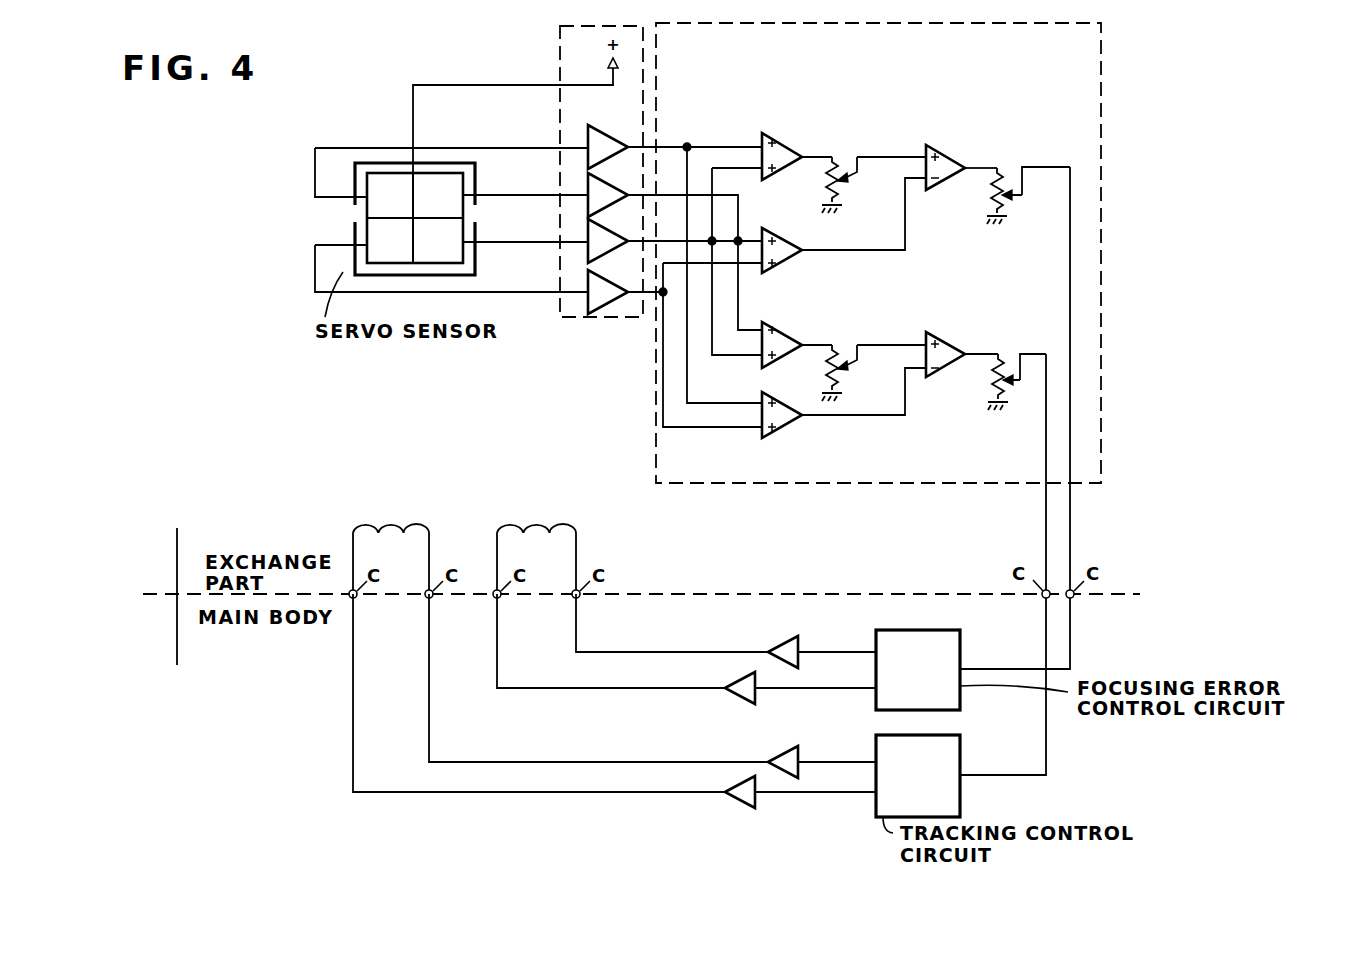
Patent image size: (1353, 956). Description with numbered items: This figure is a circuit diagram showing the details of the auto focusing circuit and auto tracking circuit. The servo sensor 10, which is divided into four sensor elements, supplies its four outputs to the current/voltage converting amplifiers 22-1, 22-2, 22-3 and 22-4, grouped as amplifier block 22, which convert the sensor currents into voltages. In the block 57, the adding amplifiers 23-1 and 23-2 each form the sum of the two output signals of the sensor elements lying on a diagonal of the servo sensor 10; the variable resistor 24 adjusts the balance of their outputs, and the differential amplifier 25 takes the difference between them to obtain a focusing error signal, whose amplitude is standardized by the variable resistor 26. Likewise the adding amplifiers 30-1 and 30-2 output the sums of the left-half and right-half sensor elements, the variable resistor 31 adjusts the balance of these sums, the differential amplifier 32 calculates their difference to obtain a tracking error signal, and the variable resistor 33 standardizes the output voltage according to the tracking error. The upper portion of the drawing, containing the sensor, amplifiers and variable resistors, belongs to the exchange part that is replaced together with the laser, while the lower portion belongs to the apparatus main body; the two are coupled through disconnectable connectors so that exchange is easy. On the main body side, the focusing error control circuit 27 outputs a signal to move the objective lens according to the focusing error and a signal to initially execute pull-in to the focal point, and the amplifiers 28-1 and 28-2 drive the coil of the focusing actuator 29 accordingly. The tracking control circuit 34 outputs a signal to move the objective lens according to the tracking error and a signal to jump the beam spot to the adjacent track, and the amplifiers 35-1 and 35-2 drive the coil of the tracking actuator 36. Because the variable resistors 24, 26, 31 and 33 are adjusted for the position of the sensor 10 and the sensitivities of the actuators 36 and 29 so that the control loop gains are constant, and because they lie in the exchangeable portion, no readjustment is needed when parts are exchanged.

The servo sensor 10 is at (372, 163).
The current/voltage converting amplifier block 22 is at (567, 193).
The current/voltage converting amplifier 22-1 is at (588, 136).
The current/voltage converting amplifier 22-2 is at (588, 185).
The current/voltage converting amplifier 22-3 is at (588, 232).
The current/voltage converting amplifier 22-4 is at (588, 280).
The adding amplifier 23-1 is at (793, 146).
The adding amplifier 23-2 is at (790, 247).
The variable resistor 24 is at (845, 157).
The differential amplifier 25 is at (953, 155).
The variable resistor 26 is at (1013, 165).
The focusing error control circuit 27 is at (905, 680).
The amplifier 28-1 is at (776, 646).
The amplifier 28-2 is at (740, 700).
The focusing actuator 29 is at (582, 547).
The adding amplifier 30-1 is at (786, 330).
The adding amplifier 30-2 is at (790, 424).
The variable resistor 31 is at (845, 350).
The differential amplifier 32 is at (953, 342).
The variable resistor 33 is at (1010, 355).
The tracking control circuit 34 is at (905, 785).
The amplifier 35-1 is at (776, 757).
The amplifier 35-2 is at (750, 801).
The tracking actuator 36 is at (435, 547).
The servo signal processing circuit 57 is at (904, 484).